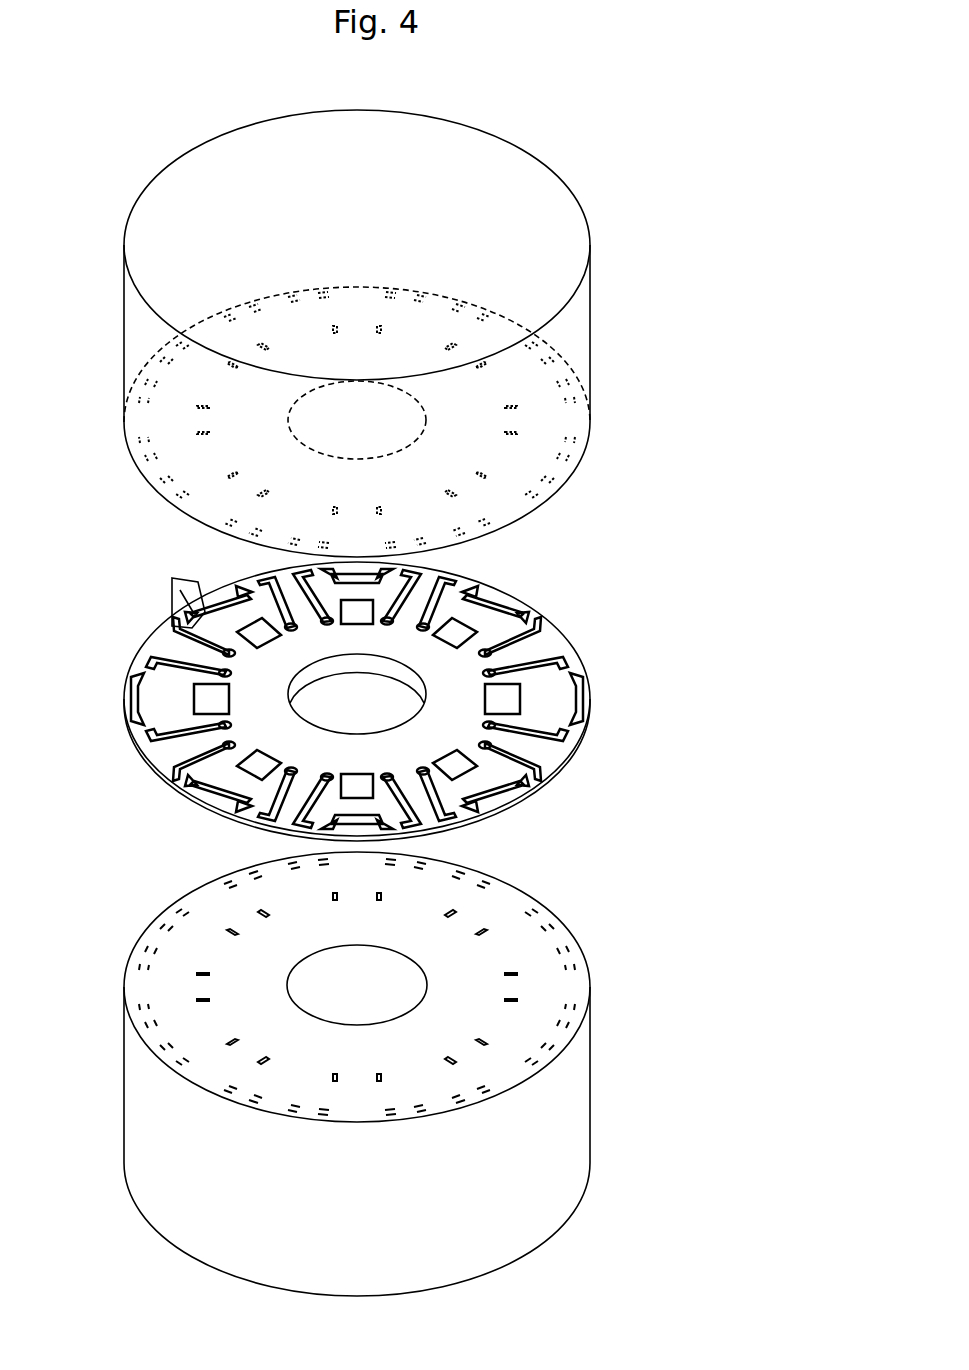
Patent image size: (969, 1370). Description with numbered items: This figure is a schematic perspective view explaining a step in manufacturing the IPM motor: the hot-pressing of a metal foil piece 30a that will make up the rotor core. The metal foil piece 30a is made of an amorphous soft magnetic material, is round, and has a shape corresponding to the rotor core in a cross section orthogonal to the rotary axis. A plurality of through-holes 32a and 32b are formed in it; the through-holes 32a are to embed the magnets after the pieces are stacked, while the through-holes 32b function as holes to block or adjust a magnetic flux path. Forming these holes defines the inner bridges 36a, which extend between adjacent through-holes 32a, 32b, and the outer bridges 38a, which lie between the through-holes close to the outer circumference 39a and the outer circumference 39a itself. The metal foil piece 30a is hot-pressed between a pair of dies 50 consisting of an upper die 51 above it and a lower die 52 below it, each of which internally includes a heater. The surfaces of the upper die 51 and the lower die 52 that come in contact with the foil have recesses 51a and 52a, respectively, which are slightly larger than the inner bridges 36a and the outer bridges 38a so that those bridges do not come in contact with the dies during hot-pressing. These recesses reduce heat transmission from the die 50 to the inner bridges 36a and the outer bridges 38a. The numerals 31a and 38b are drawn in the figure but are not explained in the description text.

The pair of dies 50 is at (603, 172).
The upper die 51 is at (580, 328).
The recesses 51a is at (379, 325).
The metal foil piece 30a is at (373, 677).
The central through hole 31a is at (395, 713).
The through-holes 32a is at (510, 637).
The through-holes 32b is at (168, 733).
The inner bridges 36a is at (300, 786).
The outer bridges 38a is at (178, 622).
The engagement slot 38b is at (380, 577).
The outer circumference 39a is at (576, 747).
The lower die 52 is at (591, 1083).
The recesses 52a is at (422, 1118).